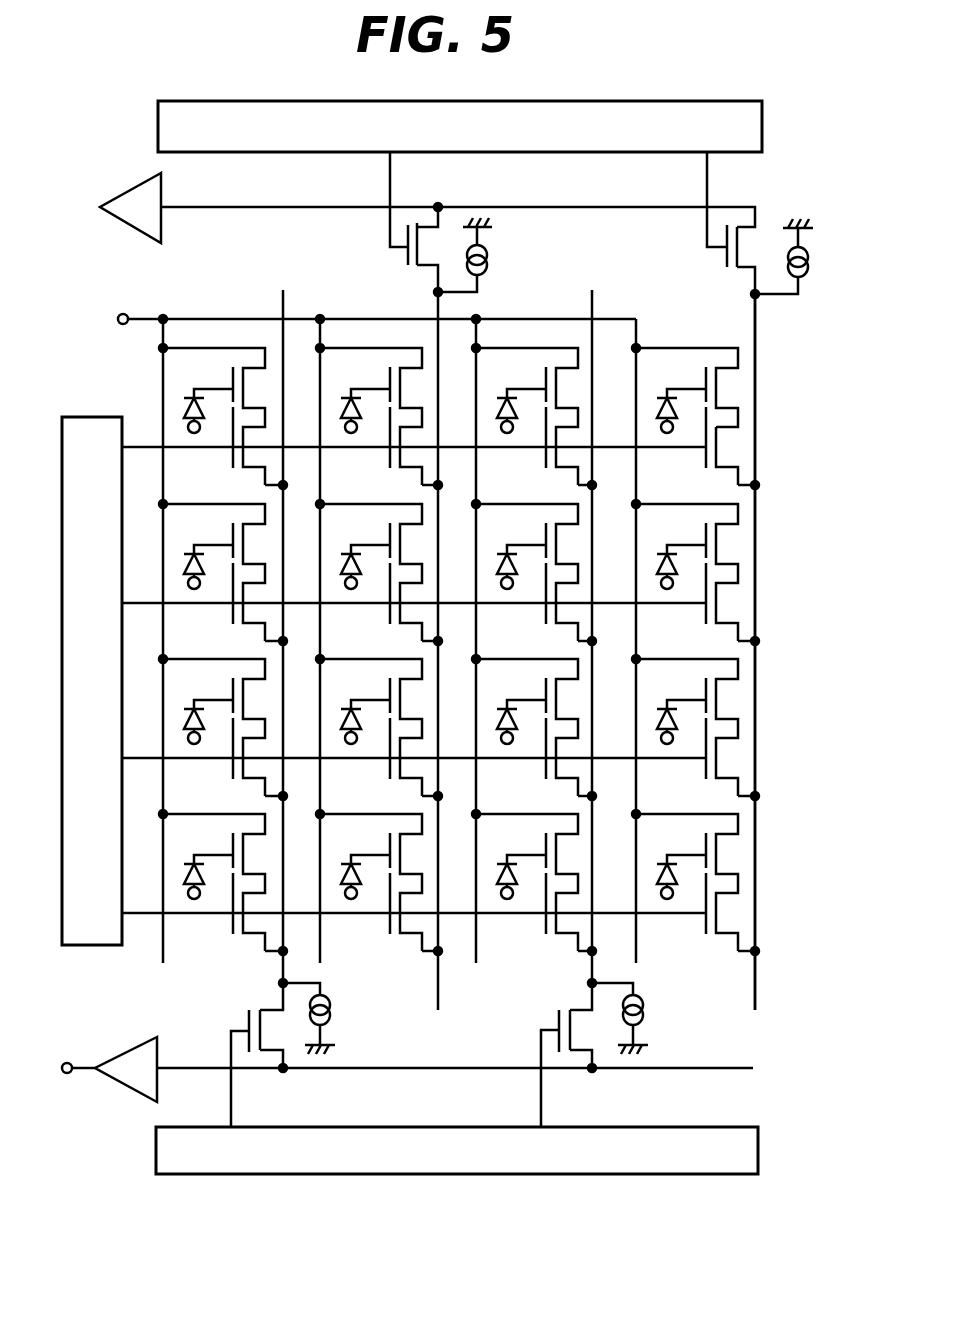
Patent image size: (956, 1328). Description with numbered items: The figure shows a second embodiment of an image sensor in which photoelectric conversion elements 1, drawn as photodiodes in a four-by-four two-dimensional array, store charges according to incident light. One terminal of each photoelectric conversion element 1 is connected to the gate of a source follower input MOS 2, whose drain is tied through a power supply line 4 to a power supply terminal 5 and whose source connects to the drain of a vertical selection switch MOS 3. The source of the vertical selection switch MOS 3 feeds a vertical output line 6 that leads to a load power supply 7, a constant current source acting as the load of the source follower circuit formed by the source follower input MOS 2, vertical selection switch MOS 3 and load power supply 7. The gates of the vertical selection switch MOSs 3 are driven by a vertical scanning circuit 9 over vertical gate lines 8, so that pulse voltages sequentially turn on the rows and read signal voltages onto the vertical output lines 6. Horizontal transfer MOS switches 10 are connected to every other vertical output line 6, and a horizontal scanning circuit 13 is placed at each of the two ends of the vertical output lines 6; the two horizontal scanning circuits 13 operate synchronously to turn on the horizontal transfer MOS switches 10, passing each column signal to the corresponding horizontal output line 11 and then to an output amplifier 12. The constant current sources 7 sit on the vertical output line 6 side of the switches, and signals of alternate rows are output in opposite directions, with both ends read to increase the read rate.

The photoelectric conversion element 1 is at (665, 392).
The source follower input MOS 2 is at (737, 390).
The vertical selection switch MOS 3 is at (738, 445).
The power supply line 4 is at (636, 928).
The power supply terminal 5 is at (130, 314).
The vertical output line 6 is at (755, 678).
The load power supply 7 is at (492, 258).
The vertical gate line 8 is at (183, 446).
The vertical scanning circuit 9 is at (97, 417).
The horizontal transfer MOS switch 10 is at (406, 263).
The horizontal output line 11 is at (262, 210).
The output amplifier 12 is at (135, 230).
The horizontal scanning circuit 13 is at (300, 153).